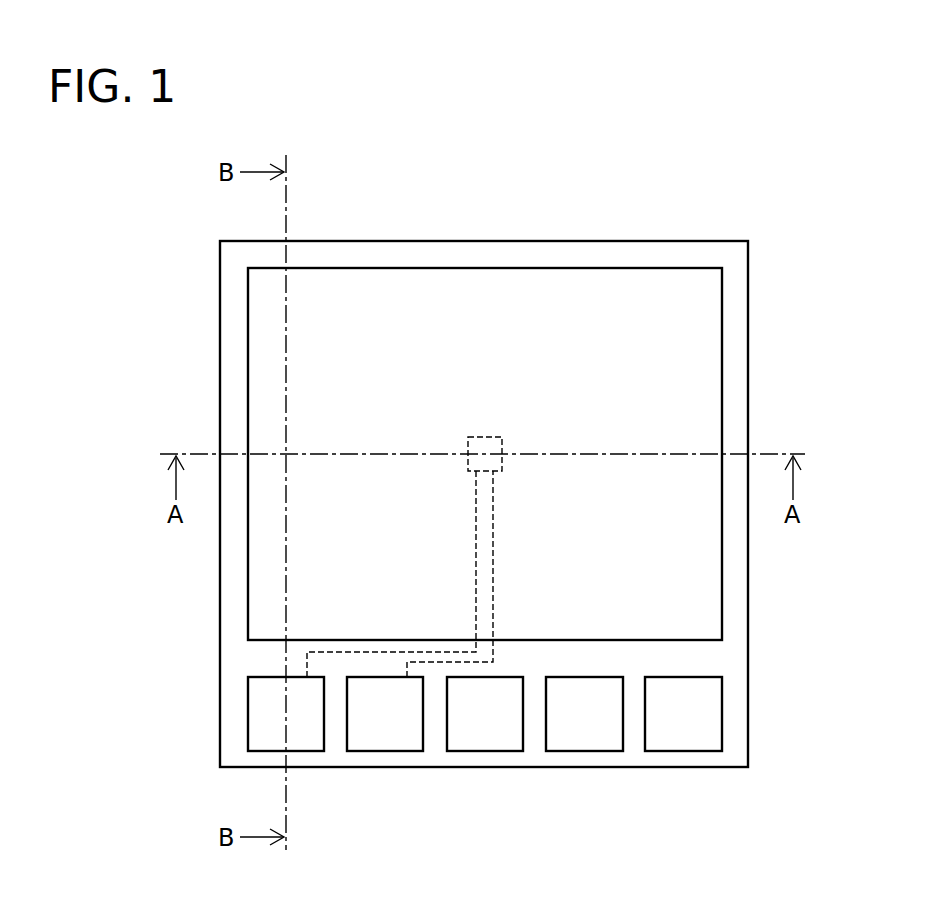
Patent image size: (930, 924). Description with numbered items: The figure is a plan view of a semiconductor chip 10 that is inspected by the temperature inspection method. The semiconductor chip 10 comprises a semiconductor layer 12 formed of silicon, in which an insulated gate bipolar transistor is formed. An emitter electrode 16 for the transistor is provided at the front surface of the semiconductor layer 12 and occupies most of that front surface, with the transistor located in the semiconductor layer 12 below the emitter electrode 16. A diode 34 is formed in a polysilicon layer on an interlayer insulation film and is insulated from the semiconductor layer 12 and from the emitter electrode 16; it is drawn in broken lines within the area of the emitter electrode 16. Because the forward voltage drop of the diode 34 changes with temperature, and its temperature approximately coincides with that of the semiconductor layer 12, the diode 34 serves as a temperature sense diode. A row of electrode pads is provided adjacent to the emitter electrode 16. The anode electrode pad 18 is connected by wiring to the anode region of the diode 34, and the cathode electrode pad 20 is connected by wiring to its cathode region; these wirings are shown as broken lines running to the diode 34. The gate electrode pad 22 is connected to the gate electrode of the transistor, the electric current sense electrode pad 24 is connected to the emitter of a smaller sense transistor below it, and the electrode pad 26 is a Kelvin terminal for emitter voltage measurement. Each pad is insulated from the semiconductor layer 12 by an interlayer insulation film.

The semiconductor chip 10 is at (173, 152).
The semiconductor layer 12 is at (750, 381).
The emitter electrode 16 is at (601, 296).
The anode electrode pad 18 is at (305, 740).
The cathode electrode pad 20 is at (398, 737).
The gate electrode pad 22 is at (497, 737).
The electric current sense electrode pad 24 is at (597, 737).
The electrode pad 26 is at (697, 737).
The diode 34 is at (478, 437).